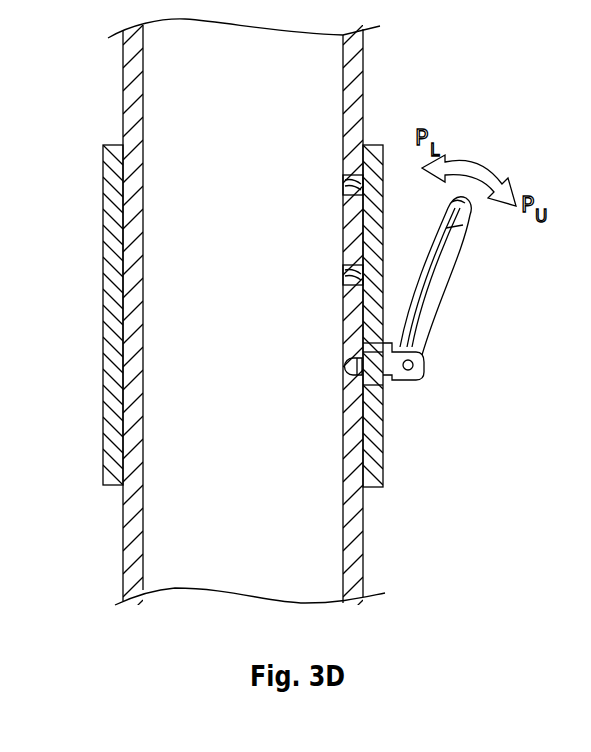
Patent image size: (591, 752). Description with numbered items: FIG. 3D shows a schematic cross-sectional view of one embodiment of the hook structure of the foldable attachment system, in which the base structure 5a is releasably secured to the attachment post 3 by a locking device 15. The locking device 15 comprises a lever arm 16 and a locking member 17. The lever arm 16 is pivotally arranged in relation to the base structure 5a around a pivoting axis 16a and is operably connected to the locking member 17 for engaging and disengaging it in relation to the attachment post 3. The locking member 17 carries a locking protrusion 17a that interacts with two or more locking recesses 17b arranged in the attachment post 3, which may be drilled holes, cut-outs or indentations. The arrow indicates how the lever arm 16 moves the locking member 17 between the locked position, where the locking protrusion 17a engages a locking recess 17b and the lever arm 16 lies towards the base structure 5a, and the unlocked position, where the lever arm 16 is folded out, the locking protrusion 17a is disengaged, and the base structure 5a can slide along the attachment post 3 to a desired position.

The attachment post 3 is at (365, 82).
The base structure 5a is at (102, 232).
The locking device 15 is at (485, 230).
The lever arm 16 is at (450, 280).
The pivoting axis 16a is at (424, 366).
The locking member 17 is at (310, 371).
The locking protrusion 17a is at (392, 381).
The locking recesses 17b is at (383, 198).